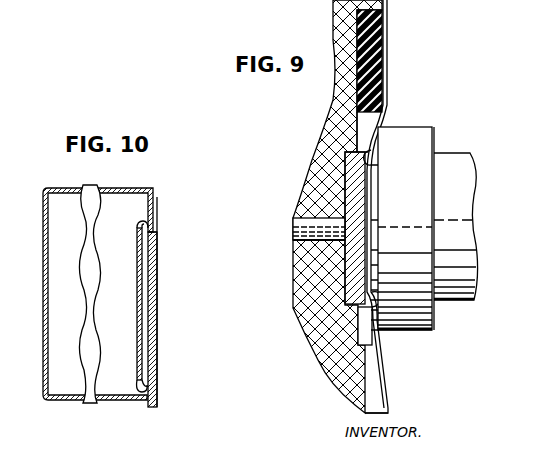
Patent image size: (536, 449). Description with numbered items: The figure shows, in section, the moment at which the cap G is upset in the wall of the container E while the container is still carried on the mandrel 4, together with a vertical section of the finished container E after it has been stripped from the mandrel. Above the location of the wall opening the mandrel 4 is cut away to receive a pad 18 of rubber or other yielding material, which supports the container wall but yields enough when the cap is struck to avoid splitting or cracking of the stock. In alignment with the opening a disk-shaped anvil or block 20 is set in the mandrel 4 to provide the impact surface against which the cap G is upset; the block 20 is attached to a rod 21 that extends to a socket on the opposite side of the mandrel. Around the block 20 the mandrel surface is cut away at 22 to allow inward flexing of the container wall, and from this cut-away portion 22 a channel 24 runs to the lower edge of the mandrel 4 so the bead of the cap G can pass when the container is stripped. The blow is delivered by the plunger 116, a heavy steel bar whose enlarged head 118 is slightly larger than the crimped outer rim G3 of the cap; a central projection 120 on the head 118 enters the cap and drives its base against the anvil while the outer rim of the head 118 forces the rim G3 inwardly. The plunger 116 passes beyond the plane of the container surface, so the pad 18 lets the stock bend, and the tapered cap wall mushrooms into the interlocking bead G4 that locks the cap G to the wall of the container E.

In FIG. 9, the mandrel 4 is at (345, 362).
In FIG. 9, the pad 18 is at (384, 56).
In FIG. 9, the block 20 is at (355, 277).
In FIG. 9, the rod 21 is at (293, 227).
In FIG. 9, the cut-away portion 22 is at (364, 128).
In FIG. 9, the channel 24 is at (373, 404).
In FIG. 9, the plunger 116 is at (453, 165).
In FIG. 9, the head 118 is at (422, 138).
In FIG. 9, the projection 120 is at (372, 222).
In FIG. 9, the container E is at (384, 112).
In FIG. 10, the container E is at (135, 190).
In FIG. 10, the cap G is at (147, 273).
In FIG. 10, the outer rim of the cap G3 is at (152, 228).
In FIG. 9, the interlocking bead G4 is at (355, 325).
In FIG. 10, the interlocking bead G4 is at (152, 387).